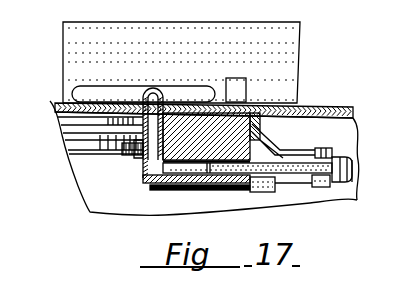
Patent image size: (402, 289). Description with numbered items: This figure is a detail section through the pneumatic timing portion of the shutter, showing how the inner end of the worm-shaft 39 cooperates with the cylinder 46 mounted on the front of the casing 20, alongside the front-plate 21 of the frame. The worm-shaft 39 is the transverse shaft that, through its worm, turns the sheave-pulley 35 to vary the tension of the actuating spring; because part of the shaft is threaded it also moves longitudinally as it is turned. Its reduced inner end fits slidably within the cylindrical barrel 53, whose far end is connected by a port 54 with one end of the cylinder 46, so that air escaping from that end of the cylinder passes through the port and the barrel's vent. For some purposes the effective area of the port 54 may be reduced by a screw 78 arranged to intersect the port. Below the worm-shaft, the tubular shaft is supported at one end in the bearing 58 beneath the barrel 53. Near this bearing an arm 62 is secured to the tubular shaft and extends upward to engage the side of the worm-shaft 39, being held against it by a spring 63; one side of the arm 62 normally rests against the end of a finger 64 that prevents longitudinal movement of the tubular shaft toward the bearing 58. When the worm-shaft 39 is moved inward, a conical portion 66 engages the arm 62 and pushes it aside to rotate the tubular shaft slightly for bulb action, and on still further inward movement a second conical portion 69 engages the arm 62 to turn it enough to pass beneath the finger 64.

The casing 20 is at (324, 108).
The front-plate 21 is at (356, 115).
The second sheave-pulley 35 is at (82, 140).
The transverse shaft 39 is at (285, 168).
The cylinder 46 is at (293, 40).
The cylindrical barrel 53 is at (190, 176).
The port 54 is at (133, 148).
The bearing 58 is at (240, 188).
The arm 62 is at (316, 183).
The spring 63 is at (311, 152).
The finger 64 is at (285, 153).
The conical portion 66 is at (337, 156).
The second conical portion 69 is at (354, 181).
The screw 78 is at (142, 158).